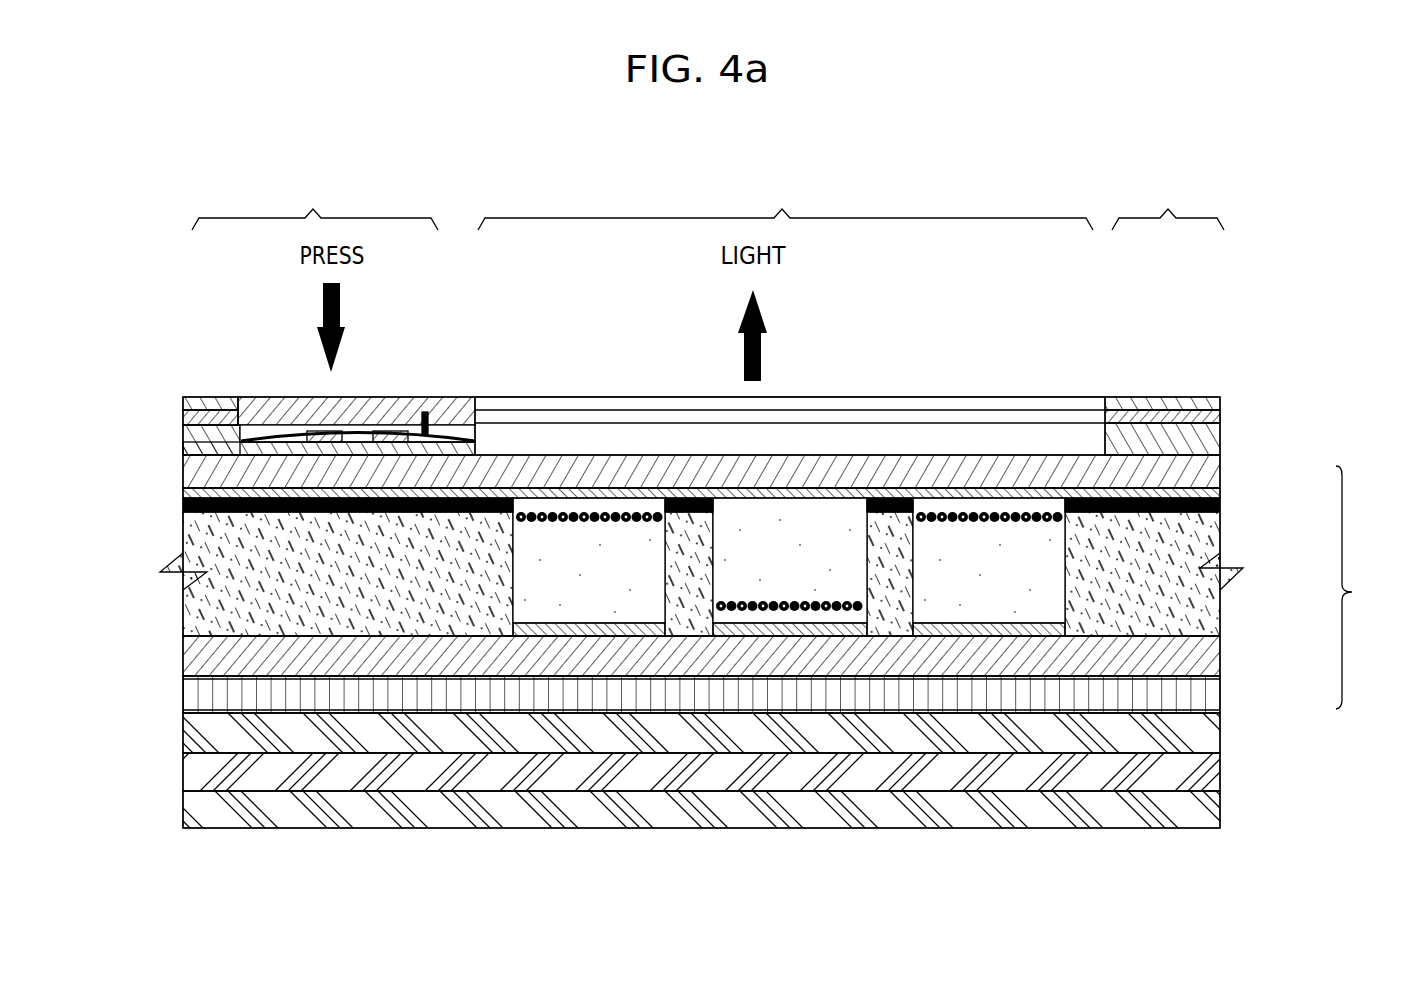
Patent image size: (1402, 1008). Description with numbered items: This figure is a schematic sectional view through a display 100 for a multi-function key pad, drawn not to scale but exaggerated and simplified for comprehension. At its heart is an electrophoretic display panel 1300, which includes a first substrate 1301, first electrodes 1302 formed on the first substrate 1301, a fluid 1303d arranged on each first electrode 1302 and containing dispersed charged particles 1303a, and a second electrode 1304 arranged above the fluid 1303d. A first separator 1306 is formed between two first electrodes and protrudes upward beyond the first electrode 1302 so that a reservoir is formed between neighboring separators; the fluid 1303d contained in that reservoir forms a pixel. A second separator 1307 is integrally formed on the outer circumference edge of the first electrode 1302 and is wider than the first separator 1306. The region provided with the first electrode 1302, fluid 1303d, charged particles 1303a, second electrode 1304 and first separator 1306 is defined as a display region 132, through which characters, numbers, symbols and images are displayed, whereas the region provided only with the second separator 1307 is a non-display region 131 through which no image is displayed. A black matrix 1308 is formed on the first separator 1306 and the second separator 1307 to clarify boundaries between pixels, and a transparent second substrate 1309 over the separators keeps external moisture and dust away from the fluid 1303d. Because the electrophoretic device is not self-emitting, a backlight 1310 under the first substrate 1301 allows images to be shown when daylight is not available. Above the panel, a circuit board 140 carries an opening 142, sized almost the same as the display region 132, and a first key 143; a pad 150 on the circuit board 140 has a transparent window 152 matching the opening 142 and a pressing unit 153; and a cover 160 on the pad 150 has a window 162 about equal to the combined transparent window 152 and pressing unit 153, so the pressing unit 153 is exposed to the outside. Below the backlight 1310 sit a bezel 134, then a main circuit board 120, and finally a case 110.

The display 100 is at (148, 292).
The non-display region 131 is at (708, 203).
The display region 132 is at (785, 204).
The first key 143 is at (426, 399).
The pressing unit 153 is at (468, 399).
The fluid 1303d is at (575, 598).
The charged particles 1303a is at (641, 515).
The first separator 1306 is at (865, 528).
The black matrix 1308 is at (893, 498).
The window 162 is at (977, 403).
The transparent window 152 is at (1023, 416).
The opening 142 is at (1070, 430).
The cover 160 is at (1220, 395).
The pad 150 is at (1213, 417).
The circuit board 140 is at (1210, 438).
The second substrate 1309 is at (1213, 470).
The second electrode 1304 is at (1213, 492).
The electrophoretic display panel 1300 is at (1369, 587).
The second separator 1307 is at (183, 536).
The first electrode 1302 is at (1062, 632).
The first substrate 1301 is at (1213, 652).
The backlight 1310 is at (1213, 698).
The bezel 134 is at (1213, 732).
The main circuit board 120 is at (1213, 770).
The case 110 is at (1213, 806).